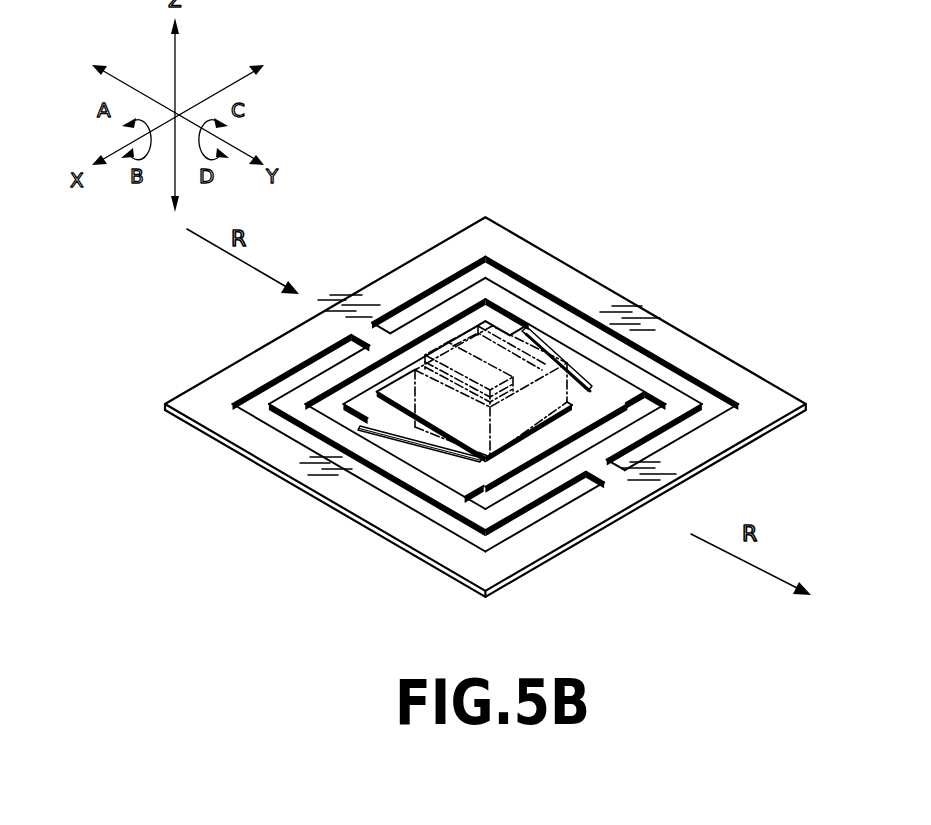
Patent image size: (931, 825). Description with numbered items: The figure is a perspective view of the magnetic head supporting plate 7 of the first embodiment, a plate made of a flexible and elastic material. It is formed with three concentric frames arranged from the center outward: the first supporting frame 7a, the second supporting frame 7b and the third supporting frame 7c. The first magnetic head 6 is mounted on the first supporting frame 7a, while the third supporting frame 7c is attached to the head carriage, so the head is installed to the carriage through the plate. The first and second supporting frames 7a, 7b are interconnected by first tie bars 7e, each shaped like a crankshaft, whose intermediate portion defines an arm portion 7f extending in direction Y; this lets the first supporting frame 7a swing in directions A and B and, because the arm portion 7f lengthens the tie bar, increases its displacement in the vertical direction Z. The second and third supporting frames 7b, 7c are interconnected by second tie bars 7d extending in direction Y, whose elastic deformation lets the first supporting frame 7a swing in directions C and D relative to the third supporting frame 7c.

The head supporting plate 7 is at (163, 404).
The first supporting frame 7a is at (574, 382).
The second supporting frame 7b is at (622, 371).
The third supporting frame 7c is at (700, 372).
The second tie bars 7d is at (368, 332).
The first tie bars 7e is at (400, 438).
The arm portion 7f is at (426, 452).
The first magnetic head 6 is at (527, 414).